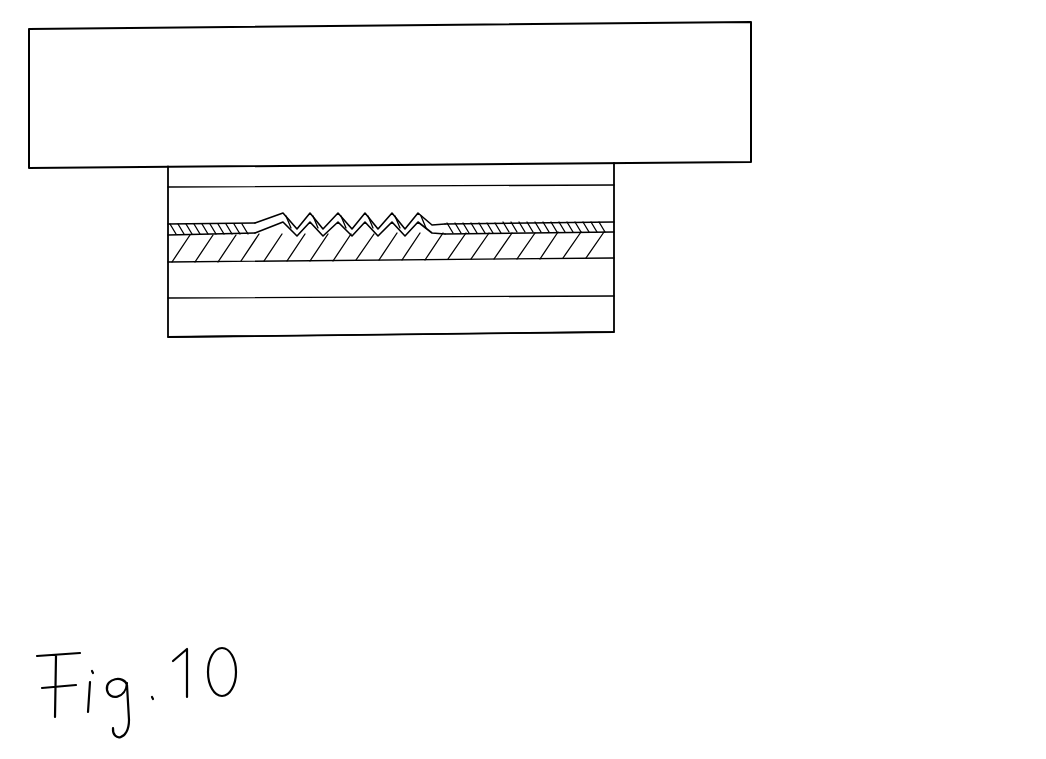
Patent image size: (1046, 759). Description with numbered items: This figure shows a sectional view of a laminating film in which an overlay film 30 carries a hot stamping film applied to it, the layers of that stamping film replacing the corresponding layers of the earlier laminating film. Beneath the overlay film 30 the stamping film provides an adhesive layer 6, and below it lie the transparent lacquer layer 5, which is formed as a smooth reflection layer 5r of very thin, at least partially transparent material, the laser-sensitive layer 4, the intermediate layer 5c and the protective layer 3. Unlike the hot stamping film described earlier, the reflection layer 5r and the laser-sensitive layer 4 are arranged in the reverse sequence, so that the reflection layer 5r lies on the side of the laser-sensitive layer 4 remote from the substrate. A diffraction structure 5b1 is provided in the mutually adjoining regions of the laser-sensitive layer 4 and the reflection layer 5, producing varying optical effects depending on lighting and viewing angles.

The overlay film 30 is at (699, 83).
The adhesive layer 6 is at (560, 173).
The reflection layer 5 is at (557, 202).
The smooth reflection layer 5r is at (562, 229).
The laser-sensitive layer 4 is at (562, 248).
The intermediate layer 5c is at (557, 275).
The protective layer 3 is at (557, 315).
The relief structure 5b1 is at (355, 227).